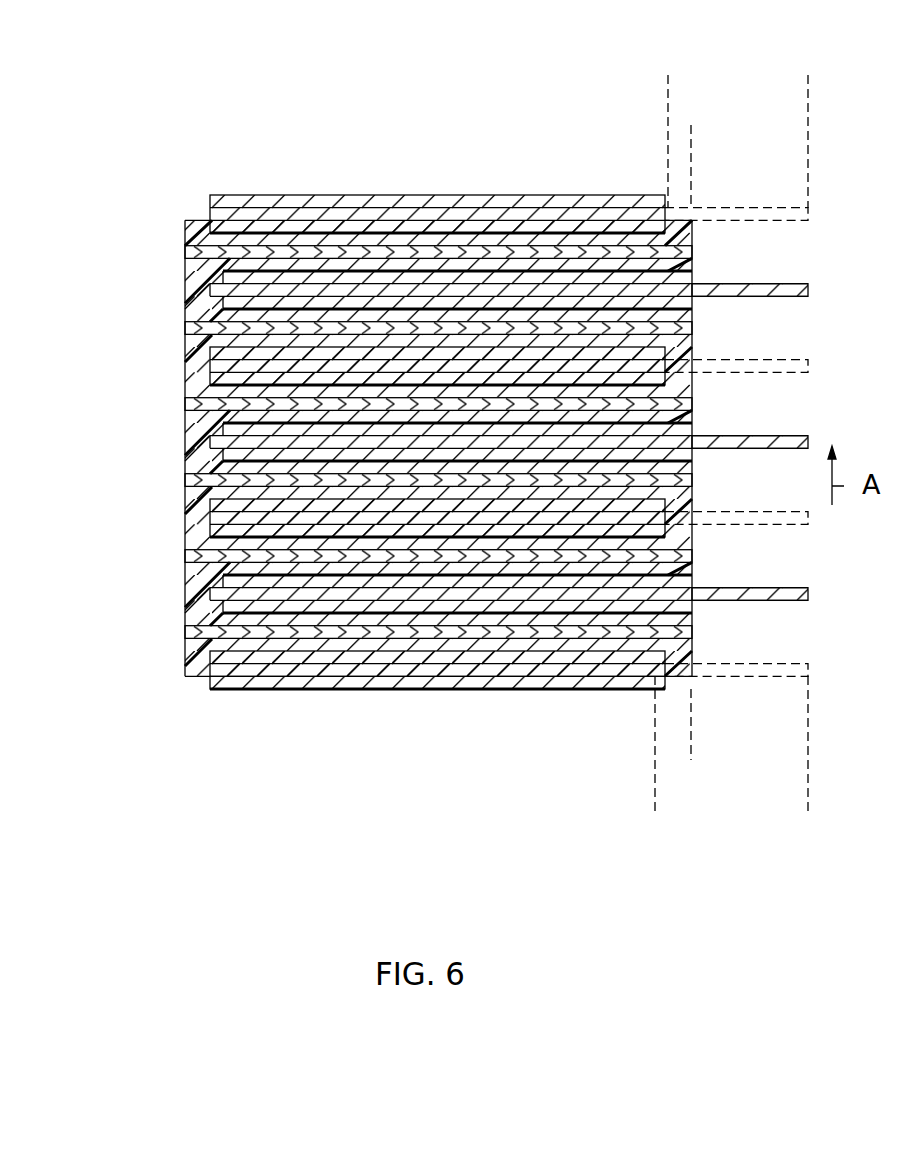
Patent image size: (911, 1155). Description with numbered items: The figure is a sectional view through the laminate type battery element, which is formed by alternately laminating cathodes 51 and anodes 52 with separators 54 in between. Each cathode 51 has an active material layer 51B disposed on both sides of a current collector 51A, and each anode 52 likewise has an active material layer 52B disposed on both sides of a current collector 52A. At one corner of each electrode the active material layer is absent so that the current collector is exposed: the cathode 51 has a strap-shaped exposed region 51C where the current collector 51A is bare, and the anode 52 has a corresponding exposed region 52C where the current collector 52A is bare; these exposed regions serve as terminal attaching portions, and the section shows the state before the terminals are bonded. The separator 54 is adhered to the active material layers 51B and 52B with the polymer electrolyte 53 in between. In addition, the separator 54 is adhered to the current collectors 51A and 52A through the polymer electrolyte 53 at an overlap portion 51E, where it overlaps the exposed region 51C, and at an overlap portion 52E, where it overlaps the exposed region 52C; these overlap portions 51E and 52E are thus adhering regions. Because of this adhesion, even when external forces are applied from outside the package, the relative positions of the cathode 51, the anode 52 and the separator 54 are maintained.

The cathode 51 is at (410, 460).
The current collector 51A is at (222, 590).
The active material layer 51B is at (213, 620).
The exposed region 51C is at (808, 820).
The overlap portion 51E is at (691, 760).
The anode 52 is at (352, 442).
The current collector 52A is at (220, 364).
The active material layer 52B is at (213, 376).
The exposed region 52C is at (807, 57).
The overlap portion 52E is at (691, 122).
The polymer electrolyte 53 is at (350, 343).
The separator 54 is at (188, 480).